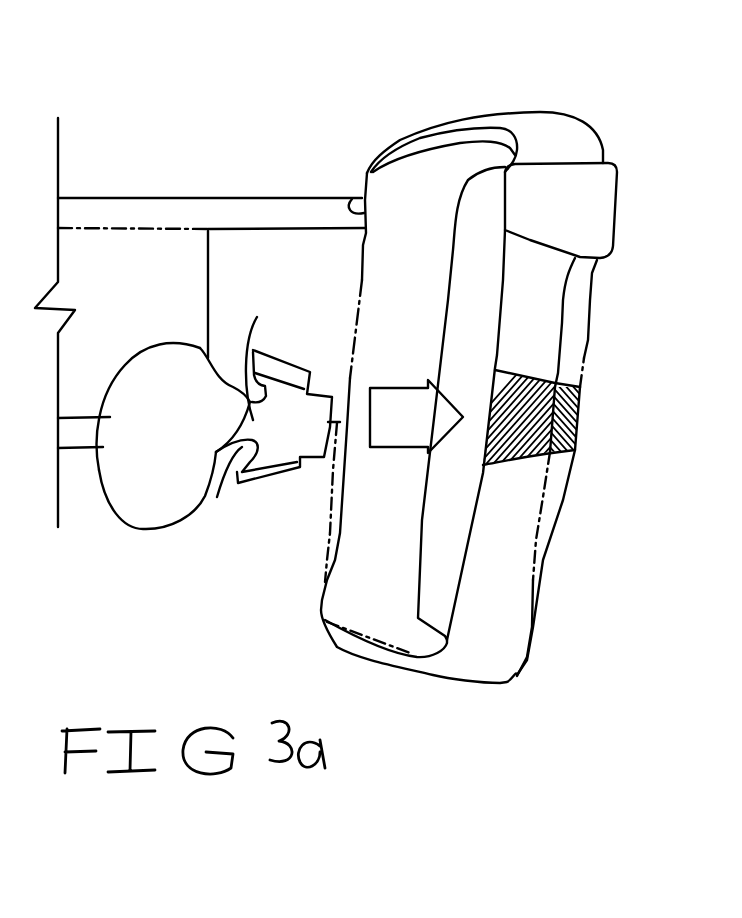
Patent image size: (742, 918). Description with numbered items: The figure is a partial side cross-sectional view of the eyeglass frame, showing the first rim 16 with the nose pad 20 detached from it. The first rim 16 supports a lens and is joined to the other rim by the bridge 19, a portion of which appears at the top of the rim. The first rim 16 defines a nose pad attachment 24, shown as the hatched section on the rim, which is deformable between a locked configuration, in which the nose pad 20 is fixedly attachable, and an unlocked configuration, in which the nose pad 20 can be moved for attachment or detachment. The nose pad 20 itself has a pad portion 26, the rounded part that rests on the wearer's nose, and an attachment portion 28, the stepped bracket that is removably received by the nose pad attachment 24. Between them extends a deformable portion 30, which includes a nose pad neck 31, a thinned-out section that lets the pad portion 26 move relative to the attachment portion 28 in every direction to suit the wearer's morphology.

The first rim 16 is at (545, 86).
The bridge 19 is at (578, 202).
The nose pad 20 is at (153, 542).
The nose pad attachment 24 is at (592, 458).
The pad portion 26 is at (170, 525).
The attachment portion 28 is at (317, 362).
The deformable portion 30 is at (269, 340).
The nose pad neck 31 is at (217, 497).